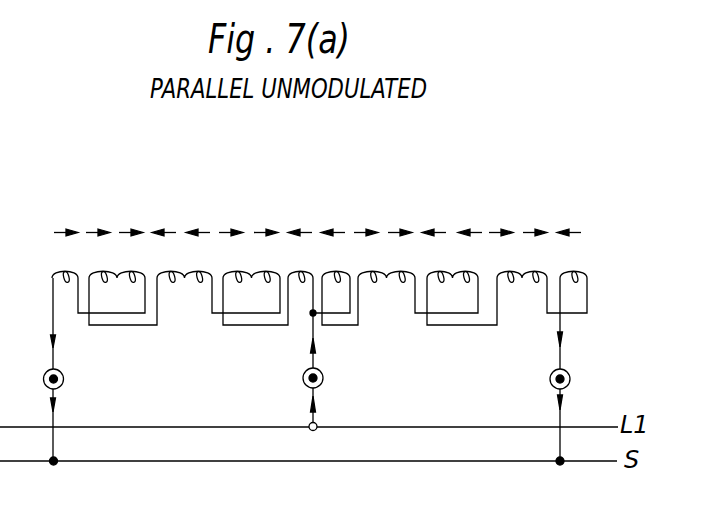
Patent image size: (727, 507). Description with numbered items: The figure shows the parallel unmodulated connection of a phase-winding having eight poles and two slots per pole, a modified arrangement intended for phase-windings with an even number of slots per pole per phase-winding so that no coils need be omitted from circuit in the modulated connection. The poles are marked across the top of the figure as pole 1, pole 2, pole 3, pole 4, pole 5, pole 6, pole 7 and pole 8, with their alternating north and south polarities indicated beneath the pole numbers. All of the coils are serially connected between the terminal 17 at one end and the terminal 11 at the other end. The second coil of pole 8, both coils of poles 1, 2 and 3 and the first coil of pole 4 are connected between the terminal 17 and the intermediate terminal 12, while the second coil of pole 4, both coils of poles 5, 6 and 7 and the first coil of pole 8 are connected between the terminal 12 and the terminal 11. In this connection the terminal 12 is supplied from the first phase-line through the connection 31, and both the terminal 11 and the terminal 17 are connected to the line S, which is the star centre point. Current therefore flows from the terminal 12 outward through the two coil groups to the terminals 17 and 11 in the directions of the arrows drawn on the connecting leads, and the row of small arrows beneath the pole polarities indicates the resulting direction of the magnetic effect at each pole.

The pole 1 is at (117, 192).
The pole 2 is at (182, 192).
The pole 3 is at (249, 192).
The pole 4 is at (316, 192).
The pole 5 is at (386, 192).
The pole 6 is at (449, 192).
The pole 7 is at (517, 192).
The pole 8 is at (315, 192).
The terminal 11 is at (549, 378).
The terminal 12 is at (324, 376).
The terminal 17 is at (64, 377).
The connection 31 is at (316, 403).